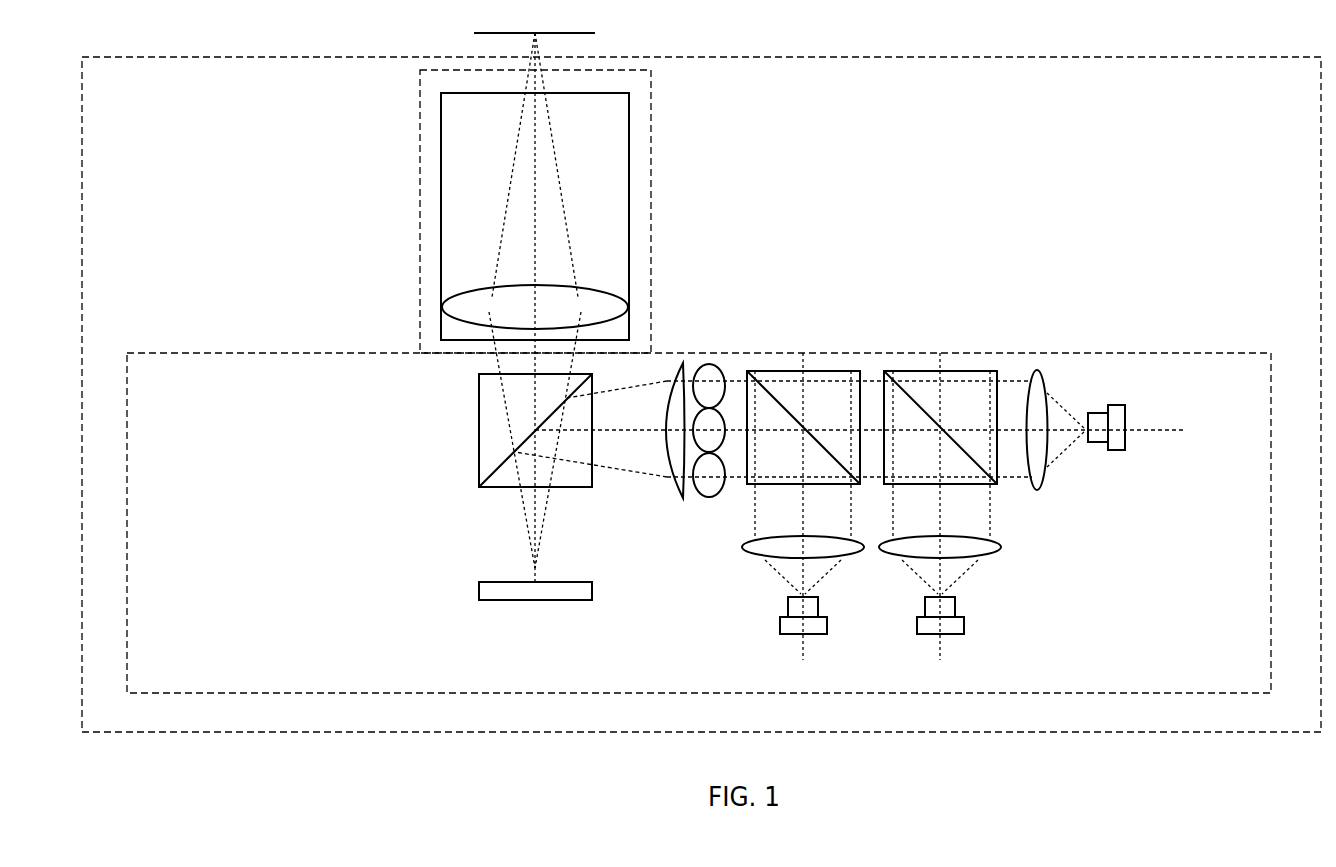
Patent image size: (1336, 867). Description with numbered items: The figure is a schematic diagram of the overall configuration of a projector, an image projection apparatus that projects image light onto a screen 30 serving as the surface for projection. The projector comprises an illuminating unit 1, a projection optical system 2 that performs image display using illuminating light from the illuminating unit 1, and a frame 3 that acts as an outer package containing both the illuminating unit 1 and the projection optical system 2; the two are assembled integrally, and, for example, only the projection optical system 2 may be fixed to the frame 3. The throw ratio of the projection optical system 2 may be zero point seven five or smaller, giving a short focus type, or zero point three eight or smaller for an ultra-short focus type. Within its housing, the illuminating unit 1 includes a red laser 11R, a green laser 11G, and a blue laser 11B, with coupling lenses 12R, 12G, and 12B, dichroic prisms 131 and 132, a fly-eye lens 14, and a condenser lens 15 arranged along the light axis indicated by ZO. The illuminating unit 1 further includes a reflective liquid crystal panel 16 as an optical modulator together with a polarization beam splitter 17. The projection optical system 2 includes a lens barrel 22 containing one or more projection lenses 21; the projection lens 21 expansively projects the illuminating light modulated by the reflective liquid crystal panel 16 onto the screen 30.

The illuminating unit 1 is at (1085, 349).
The projection optical system 2 is at (652, 210).
The frame 3 is at (1018, 55).
The screen 30 is at (578, 33).
The lens barrel 22 is at (441, 153).
The projection lens 21 is at (455, 297).
The polarization beam splitter (PBS) 17 is at (580, 482).
The reflective liquid crystal panel 16 is at (567, 600).
The condenser lens 15 is at (676, 500).
The fly-eye lens 14 is at (710, 500).
The light axis ZO is at (635, 432).
The dichroic prism 132 is at (818, 368).
The dichroic prism 131 is at (955, 368).
The coupling lens 12R is at (856, 551).
The coupling lens 12G is at (994, 551).
The coupling lens 12B is at (1045, 370).
The red laser 11R is at (823, 626).
The green laser 11G is at (960, 626).
The blue laser 11B is at (1128, 443).